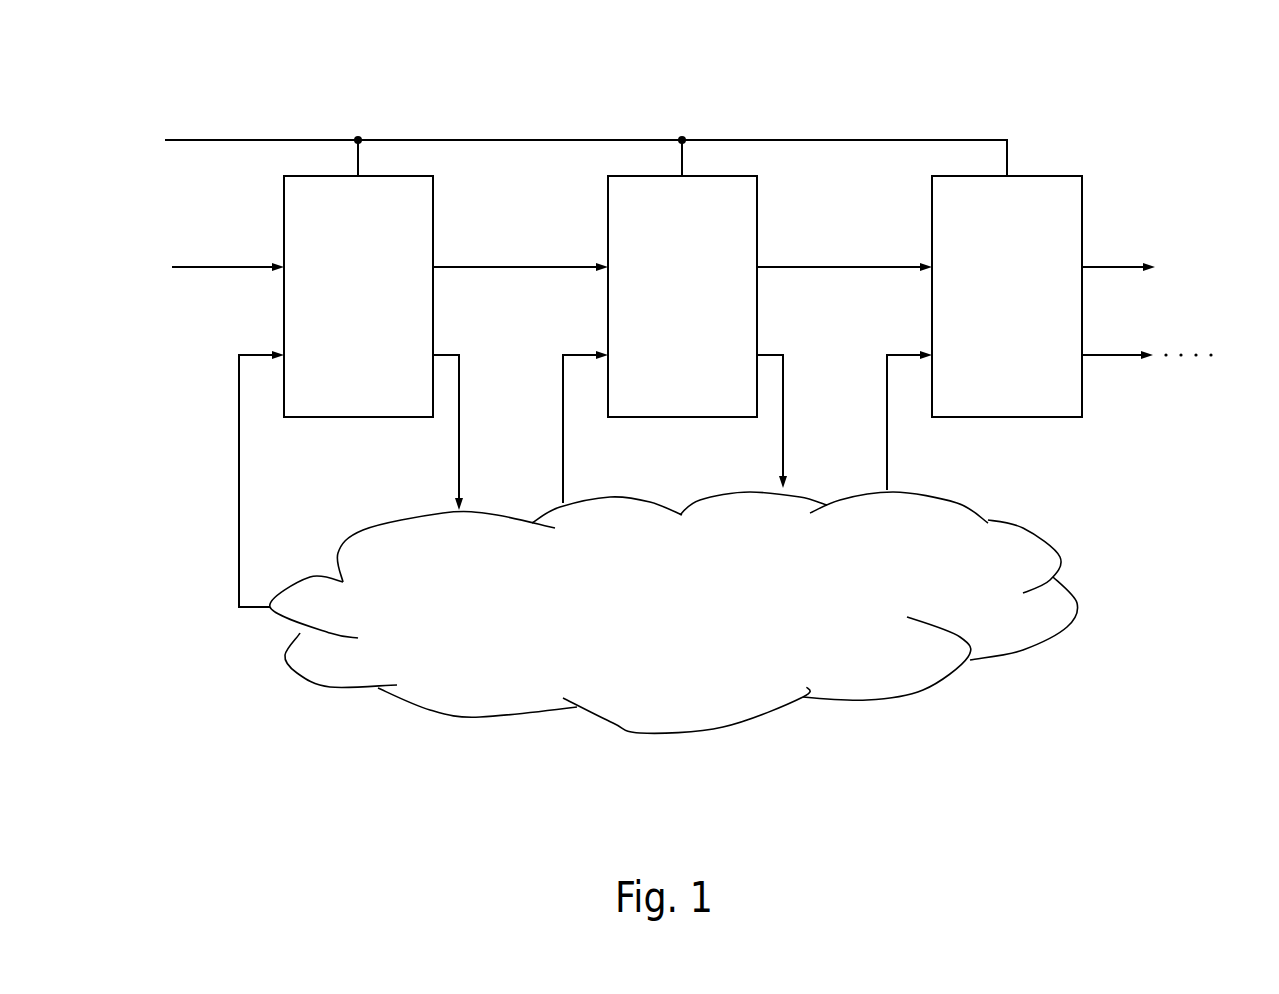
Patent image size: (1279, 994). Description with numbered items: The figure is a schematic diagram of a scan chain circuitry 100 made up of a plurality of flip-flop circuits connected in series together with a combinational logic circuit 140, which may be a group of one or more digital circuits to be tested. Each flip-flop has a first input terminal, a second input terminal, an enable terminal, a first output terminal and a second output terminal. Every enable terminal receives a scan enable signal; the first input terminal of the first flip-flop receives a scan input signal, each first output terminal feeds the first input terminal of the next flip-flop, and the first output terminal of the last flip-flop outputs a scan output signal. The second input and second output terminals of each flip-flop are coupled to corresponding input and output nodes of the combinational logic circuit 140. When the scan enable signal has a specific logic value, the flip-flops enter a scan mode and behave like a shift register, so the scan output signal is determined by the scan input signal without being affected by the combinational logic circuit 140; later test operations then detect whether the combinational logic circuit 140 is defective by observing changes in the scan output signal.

The scan chain circuitry 100 is at (145, 52).
The combinational logic circuit 140 is at (705, 652).